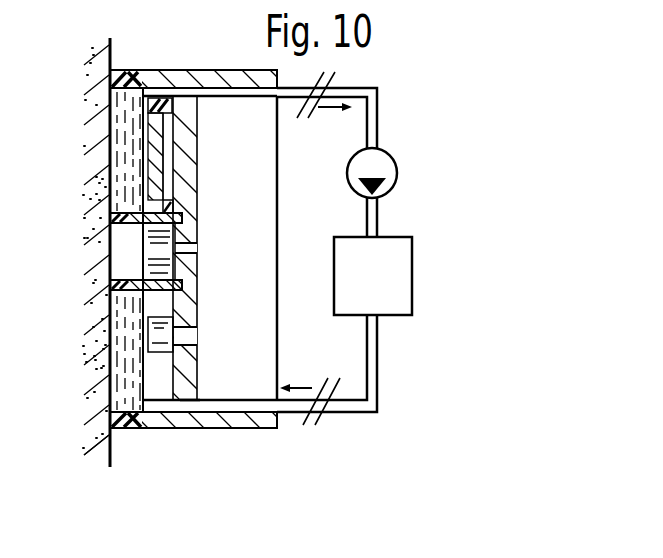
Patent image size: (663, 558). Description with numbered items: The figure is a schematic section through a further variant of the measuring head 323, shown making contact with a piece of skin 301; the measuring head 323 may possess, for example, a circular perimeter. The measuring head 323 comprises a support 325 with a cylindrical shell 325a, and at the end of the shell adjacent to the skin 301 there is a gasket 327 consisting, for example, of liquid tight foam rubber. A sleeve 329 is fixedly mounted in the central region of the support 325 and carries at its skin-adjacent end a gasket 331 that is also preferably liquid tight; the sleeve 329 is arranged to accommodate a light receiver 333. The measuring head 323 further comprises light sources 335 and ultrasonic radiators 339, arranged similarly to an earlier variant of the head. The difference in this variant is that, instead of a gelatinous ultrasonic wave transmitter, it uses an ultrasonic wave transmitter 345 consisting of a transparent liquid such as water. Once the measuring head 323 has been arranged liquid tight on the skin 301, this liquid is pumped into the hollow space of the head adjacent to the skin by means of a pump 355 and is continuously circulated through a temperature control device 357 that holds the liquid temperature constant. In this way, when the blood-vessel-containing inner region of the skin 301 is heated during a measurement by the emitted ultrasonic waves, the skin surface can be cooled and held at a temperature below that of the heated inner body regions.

The skin 301 is at (117, 455).
The measuring head 323 is at (254, 435).
The support 325 is at (187, 190).
The cylindrical shell 325a is at (187, 429).
The gasket 327 is at (130, 430).
The sleeve 329 is at (140, 212).
The gasket 331 is at (117, 212).
The light receiver 333 is at (142, 250).
The light sources 335 is at (146, 338).
The ultrasonic radiators 339 is at (164, 153).
The ultrasonic wave transmitter 345 is at (130, 387).
The pump 355 is at (352, 161).
The temperature control device 357 is at (352, 237).